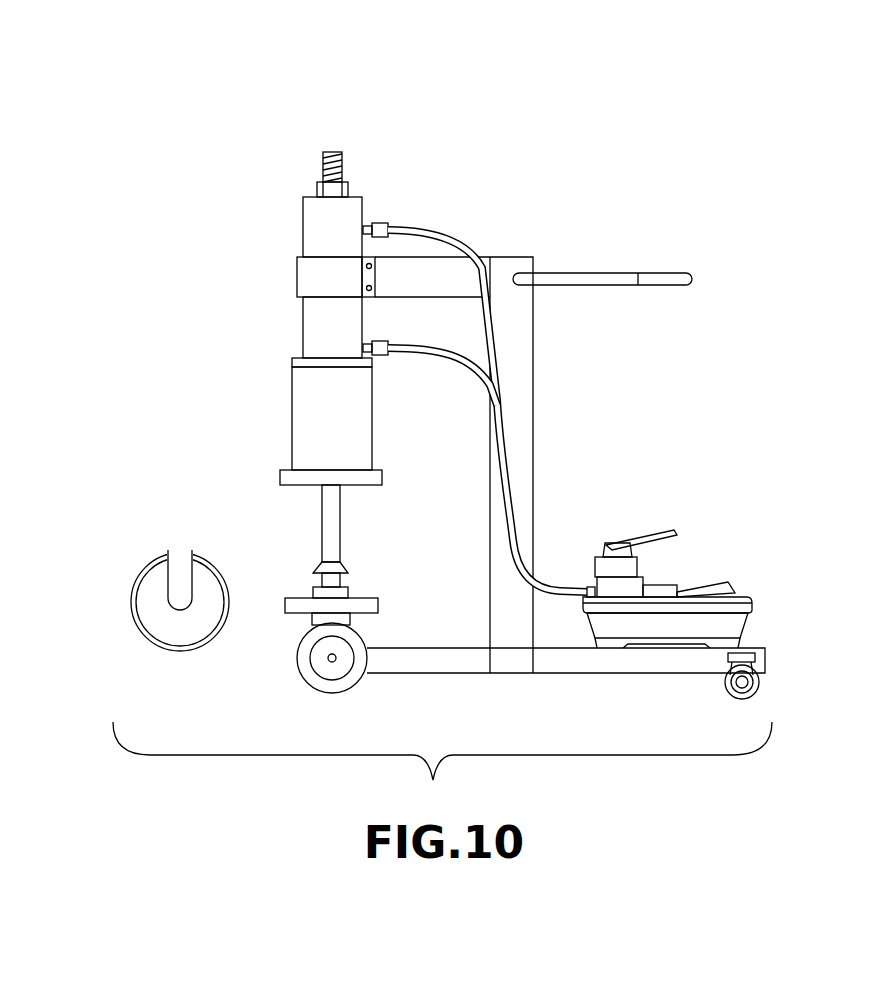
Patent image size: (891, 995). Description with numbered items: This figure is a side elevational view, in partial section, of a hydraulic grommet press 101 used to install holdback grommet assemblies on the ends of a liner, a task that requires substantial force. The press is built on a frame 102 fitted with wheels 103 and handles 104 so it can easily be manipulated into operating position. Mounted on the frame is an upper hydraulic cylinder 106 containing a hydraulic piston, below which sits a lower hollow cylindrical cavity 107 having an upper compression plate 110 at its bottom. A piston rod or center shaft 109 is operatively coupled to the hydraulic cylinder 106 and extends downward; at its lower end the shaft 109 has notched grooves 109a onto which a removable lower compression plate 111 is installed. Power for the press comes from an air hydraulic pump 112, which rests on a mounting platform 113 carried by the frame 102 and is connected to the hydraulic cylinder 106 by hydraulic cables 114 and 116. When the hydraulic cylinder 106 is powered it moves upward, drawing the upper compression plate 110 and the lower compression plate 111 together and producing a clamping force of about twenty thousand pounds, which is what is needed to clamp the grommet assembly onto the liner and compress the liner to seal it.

The grommet press 101 is at (505, 212).
The frame 102 is at (522, 353).
The wheels 103 is at (338, 688).
The handles 104 is at (598, 278).
The upper hydraulic cylinder 106 is at (307, 313).
The lower hollow cylindrical cavity 107 is at (350, 420).
The center shaft 109 is at (330, 523).
The notched grooves 109a is at (333, 580).
The upper compression plate 110 is at (290, 478).
The lower compression plate 111 is at (363, 607).
The air hydraulic pump 112 is at (722, 625).
The mounting platform 113 is at (668, 648).
The hydraulic cable 114 is at (437, 350).
The hydraulic cable 116 is at (413, 230).